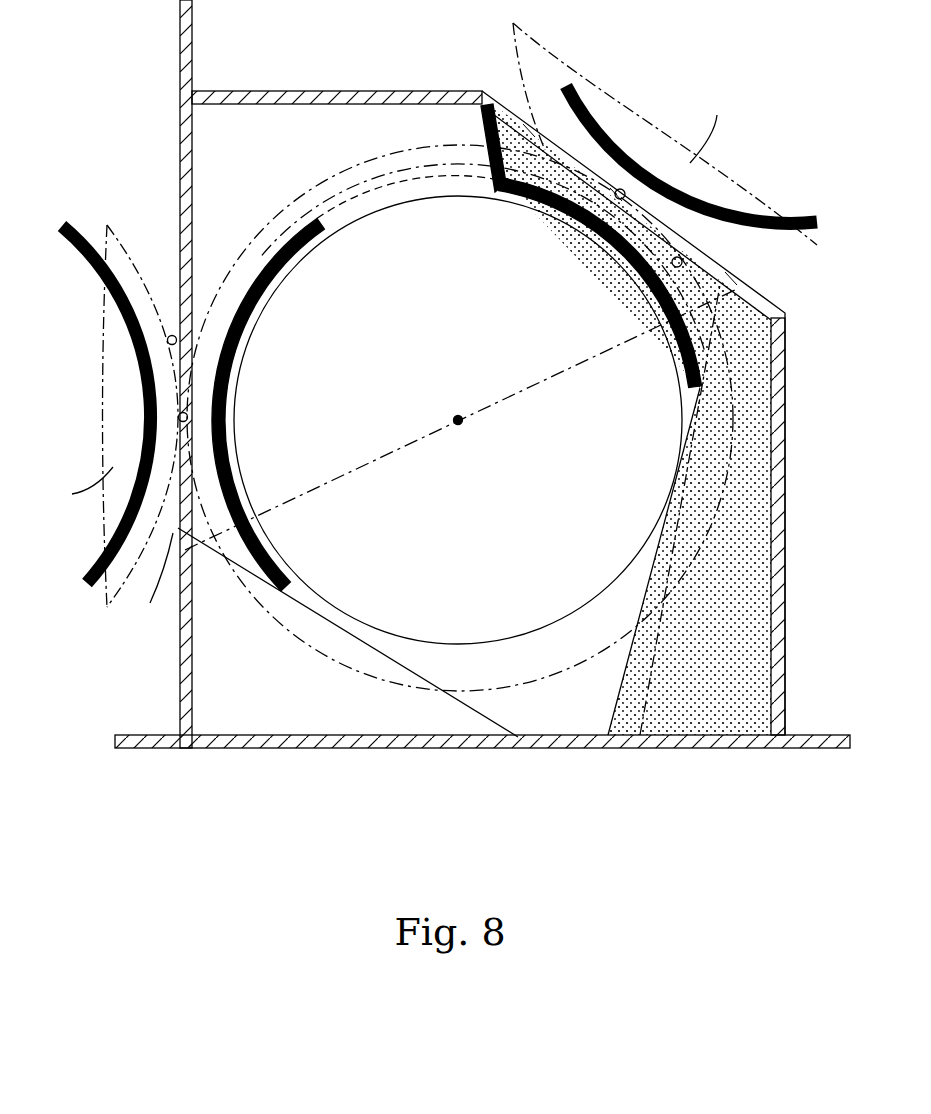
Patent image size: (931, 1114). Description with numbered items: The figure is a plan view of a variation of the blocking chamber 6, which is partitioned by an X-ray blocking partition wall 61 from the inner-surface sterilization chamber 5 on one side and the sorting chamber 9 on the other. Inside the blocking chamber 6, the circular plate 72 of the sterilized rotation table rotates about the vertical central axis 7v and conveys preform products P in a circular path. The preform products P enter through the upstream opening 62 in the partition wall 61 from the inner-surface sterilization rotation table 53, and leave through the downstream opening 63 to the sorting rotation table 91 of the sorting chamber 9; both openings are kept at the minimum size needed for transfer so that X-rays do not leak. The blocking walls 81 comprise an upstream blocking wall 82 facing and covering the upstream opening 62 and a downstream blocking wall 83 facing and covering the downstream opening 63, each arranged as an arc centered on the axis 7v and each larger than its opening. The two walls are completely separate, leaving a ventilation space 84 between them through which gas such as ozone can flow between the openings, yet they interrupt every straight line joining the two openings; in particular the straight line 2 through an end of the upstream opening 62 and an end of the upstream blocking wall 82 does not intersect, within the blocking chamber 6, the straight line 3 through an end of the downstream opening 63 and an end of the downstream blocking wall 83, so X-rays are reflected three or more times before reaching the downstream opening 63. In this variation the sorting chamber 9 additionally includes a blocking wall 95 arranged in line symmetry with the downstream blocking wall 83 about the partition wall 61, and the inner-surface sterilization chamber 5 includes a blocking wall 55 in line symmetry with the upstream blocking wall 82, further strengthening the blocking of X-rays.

The straight line 2 is at (640, 735).
The straight line 3 is at (480, 713).
The inner-surface sterilization chamber 5 is at (445, 90).
The blocking chamber 6 is at (217, 134).
The vertical axis 7v is at (460, 428).
The sorting chamber 9 is at (140, 134).
The inner-surface sterilization rotation table 53 is at (711, 123).
The blocking wall 55 is at (587, 110).
The partition wall 61 is at (292, 105).
The upstream opening 62 is at (730, 267).
The downstream opening 63 is at (152, 580).
The circular plate 72 is at (453, 612).
The blocking walls 81 is at (457, 347).
The upstream blocking wall 82 is at (525, 200).
The downstream blocking wall 83 is at (240, 358).
The ventilation space 84 is at (362, 192).
The sorting rotation table 91 is at (75, 486).
The blocking wall 95 is at (83, 232).
The preform products P is at (173, 318).